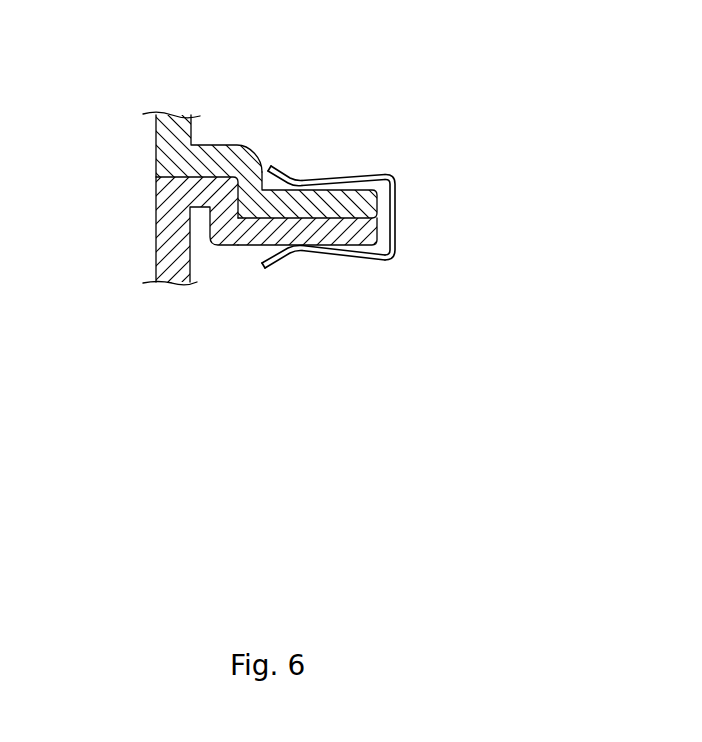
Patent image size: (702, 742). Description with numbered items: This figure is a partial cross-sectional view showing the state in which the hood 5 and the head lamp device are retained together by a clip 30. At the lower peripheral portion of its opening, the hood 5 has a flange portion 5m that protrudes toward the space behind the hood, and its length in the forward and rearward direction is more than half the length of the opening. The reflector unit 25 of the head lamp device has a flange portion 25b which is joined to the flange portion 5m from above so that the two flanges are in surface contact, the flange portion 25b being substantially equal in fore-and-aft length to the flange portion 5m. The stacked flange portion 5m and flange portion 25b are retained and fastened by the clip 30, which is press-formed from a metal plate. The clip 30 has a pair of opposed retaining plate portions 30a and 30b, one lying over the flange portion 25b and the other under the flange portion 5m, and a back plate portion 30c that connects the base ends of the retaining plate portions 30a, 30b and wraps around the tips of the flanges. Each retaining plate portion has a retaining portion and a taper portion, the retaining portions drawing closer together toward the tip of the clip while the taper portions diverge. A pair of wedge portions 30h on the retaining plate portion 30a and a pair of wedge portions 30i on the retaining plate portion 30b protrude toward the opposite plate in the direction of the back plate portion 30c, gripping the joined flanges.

The hood 5 is at (157, 234).
The flange portion 5m is at (360, 237).
The reflector unit 25 is at (157, 146).
The flange portion 25b is at (365, 203).
The clip 30 is at (411, 223).
The retaining plate portion 30a is at (348, 177).
The retaining plate portion 30b is at (343, 260).
The back plate portion 30c is at (393, 245).
The wedge portions 30h is at (315, 177).
The wedge portions 30i is at (317, 257).